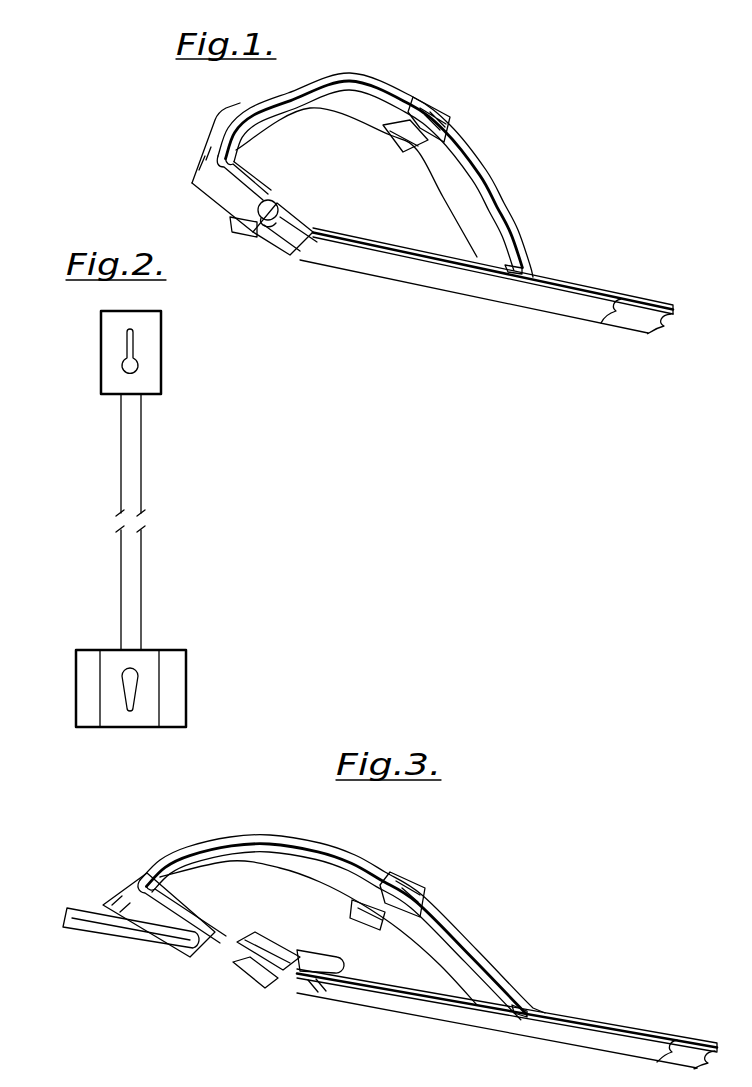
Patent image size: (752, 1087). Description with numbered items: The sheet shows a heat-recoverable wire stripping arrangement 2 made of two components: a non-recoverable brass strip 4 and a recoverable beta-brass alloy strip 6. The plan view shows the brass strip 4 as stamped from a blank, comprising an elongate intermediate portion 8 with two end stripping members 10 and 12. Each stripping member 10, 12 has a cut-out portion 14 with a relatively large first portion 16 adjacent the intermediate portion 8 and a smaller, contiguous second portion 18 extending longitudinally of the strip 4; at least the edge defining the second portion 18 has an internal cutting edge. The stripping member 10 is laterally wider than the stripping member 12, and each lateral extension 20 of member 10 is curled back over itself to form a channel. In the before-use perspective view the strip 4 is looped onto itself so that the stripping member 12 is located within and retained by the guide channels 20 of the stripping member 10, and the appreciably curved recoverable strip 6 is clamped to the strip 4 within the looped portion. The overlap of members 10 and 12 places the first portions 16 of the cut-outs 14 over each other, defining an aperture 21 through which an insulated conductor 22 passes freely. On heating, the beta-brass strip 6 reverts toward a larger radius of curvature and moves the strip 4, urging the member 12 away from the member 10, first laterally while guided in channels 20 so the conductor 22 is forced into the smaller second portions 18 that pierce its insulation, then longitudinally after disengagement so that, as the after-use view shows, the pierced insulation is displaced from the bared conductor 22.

In FIG. 1, the wire stripping arrangement 2 is at (391, 78).
In FIG. 3, the wire stripping arrangement 2 is at (352, 851).
In FIG. 1, the non-recoverable brass strip 4 is at (594, 315).
In FIG. 2, the non-recoverable brass strip 4 is at (146, 426).
In FIG. 1, the recoverable beta-brass alloy strip 6 is at (478, 254).
In FIG. 3, the recoverable beta-brass alloy strip 6 is at (300, 877).
In FIG. 1, the elongate intermediate portion 8 is at (497, 290).
In FIG. 2, the elongate intermediate portion 8 is at (135, 580).
In FIG. 3, the elongate intermediate portion 8 is at (577, 1017).
In FIG. 1, the stripping member 10 is at (297, 240).
In FIG. 2, the stripping member 10 is at (147, 716).
In FIG. 3, the stripping member 10 is at (283, 985).
In FIG. 1, the stripping member 12 is at (217, 177).
In FIG. 2, the stripping member 12 is at (157, 328).
In FIG. 3, the stripping member 12 is at (163, 905).
In FIG. 2, the cut-out portion 14 is at (146, 357).
In FIG. 2, the first portion 16 is at (123, 365).
In FIG. 2, the second portion 18 is at (127, 336).
In FIG. 1, the lateral extension 20 is at (282, 207).
In FIG. 2, the lateral extension 20 is at (78, 677).
In FIG. 1, the aperture 21 is at (264, 206).
In FIG. 3, the insulated conductor 22 is at (120, 925).